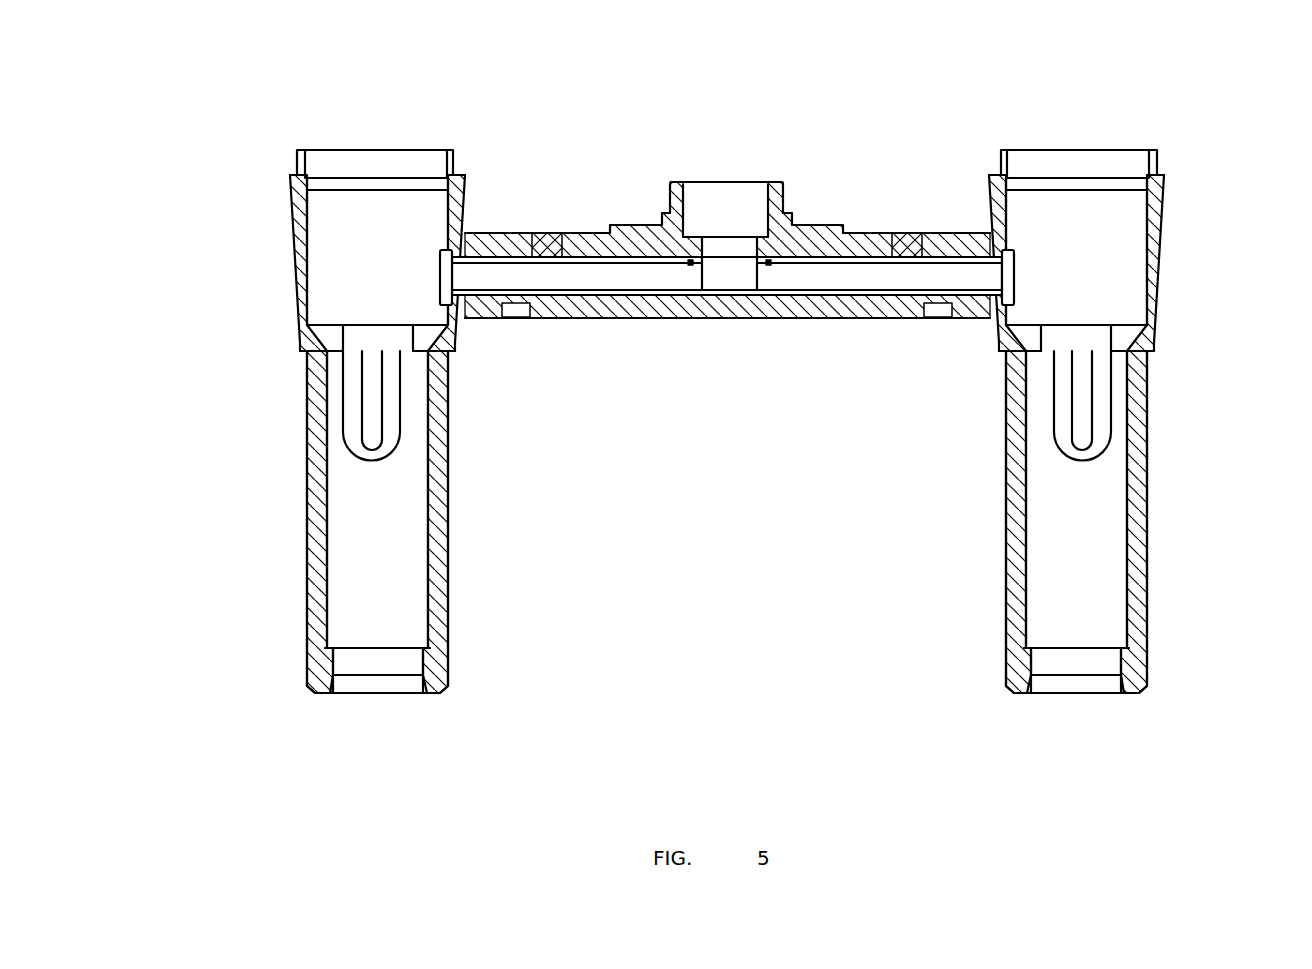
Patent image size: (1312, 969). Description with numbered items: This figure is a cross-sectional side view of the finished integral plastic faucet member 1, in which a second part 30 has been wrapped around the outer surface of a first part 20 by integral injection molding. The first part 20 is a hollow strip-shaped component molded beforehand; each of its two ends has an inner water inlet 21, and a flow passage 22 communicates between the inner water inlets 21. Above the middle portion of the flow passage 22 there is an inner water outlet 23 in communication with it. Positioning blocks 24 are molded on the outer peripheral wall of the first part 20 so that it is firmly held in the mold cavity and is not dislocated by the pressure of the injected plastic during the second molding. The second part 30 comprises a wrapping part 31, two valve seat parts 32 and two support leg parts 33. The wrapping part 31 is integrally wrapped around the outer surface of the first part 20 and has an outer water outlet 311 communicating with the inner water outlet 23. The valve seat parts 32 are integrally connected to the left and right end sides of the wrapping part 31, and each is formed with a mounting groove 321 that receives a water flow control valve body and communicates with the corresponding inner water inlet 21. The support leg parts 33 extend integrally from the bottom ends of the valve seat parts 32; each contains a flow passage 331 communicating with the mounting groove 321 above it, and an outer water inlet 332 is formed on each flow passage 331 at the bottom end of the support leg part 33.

The integral plastic faucet member 1 is at (826, 133).
The first part 20 is at (860, 243).
The inner water inlet 21 is at (438, 277).
The flow passage 22 is at (820, 278).
The inner water outlet 23 is at (737, 262).
The positioning block 24 is at (903, 244).
The second part 30 is at (575, 230).
The wrapping part 31 is at (641, 325).
The outer water outlet 311 is at (696, 195).
The valve seat part 32 is at (290, 250).
The mounting groove 321 is at (335, 163).
The support leg part 33 is at (452, 505).
The flow passage 331 is at (410, 605).
The outer water inlet 332 is at (372, 690).